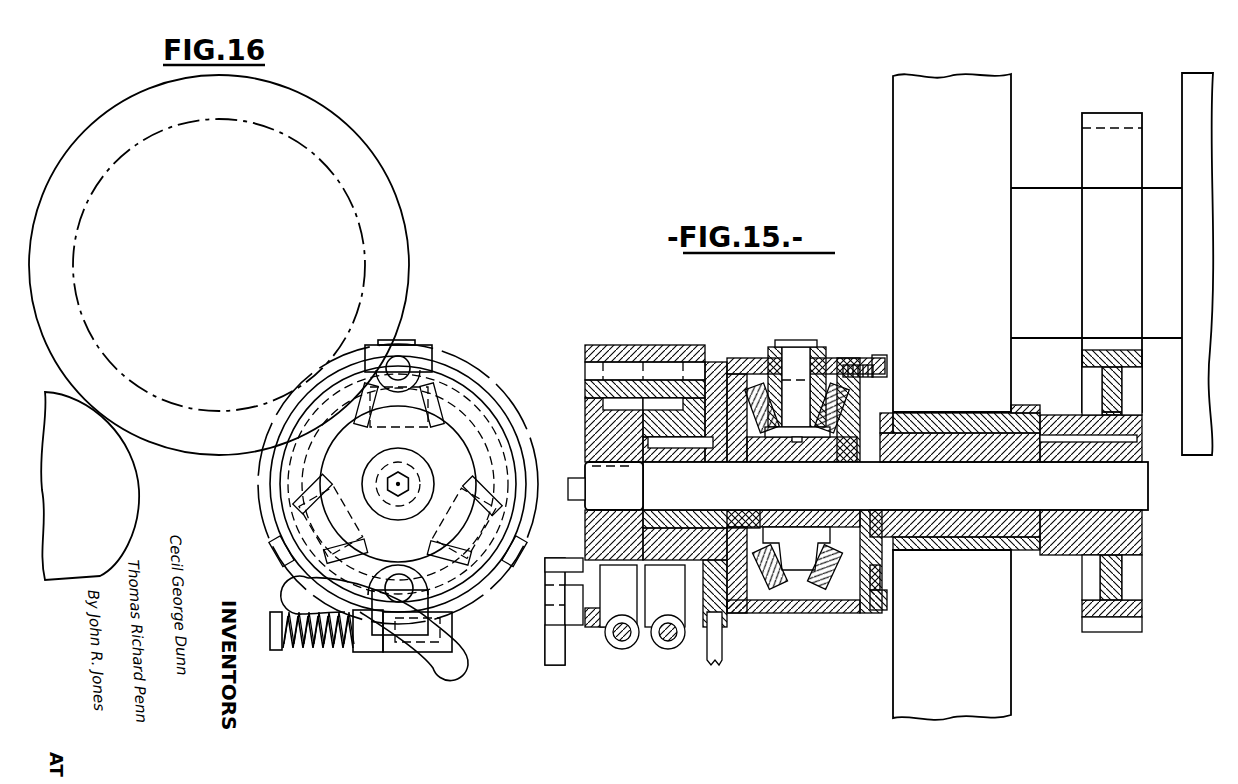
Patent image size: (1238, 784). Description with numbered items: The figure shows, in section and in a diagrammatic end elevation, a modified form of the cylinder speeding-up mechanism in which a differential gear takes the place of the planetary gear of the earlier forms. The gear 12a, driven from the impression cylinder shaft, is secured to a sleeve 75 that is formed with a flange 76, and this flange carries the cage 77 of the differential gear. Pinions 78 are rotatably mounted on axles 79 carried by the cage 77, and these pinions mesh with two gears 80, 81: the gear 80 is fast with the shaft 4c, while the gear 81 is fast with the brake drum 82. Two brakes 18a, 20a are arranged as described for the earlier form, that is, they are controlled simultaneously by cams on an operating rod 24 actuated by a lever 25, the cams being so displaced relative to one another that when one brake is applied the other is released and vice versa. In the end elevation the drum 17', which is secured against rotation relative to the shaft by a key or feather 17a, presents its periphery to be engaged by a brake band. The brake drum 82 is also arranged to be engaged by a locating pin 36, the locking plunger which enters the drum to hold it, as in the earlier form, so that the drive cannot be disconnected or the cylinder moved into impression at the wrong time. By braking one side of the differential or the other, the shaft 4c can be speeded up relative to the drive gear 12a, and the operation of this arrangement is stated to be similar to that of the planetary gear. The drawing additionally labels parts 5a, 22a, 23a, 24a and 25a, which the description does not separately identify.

In FIG. 16, the gear 12a is at (470, 360).
In FIG. 15, the gear 12a is at (1100, 634).
In FIG. 16, the pinions 78 is at (455, 397).
In FIG. 15, the pinions 78 is at (775, 385).
In FIG. 16, the drum 17' is at (374, 484).
In FIG. 16, the shaft 4c is at (378, 465).
In FIG. 15, the shaft 4c is at (858, 486).
In FIG. 16, the operating rod 24 is at (386, 622).
In FIG. 16, the lever 25 is at (414, 633).
In FIG. 15, the key or feather 17a is at (582, 432).
In FIG. 15, the brake 18a is at (620, 405).
In FIG. 15, the brake 20a is at (663, 405).
In FIG. 15, the cage 77 is at (762, 355).
In FIG. 15, the axles 79 is at (800, 360).
In FIG. 15, the flange 76 is at (882, 392).
In FIG. 15, the sleeve 75 is at (975, 425).
In FIG. 15, the sleeve 5a is at (1020, 410).
In FIG. 15, the brake drum 82 is at (690, 422).
In FIG. 15, the lever arm 24a is at (560, 566).
In FIG. 15, the lever end 25a is at (547, 636).
In FIG. 15, the bolt 22a is at (606, 578).
In FIG. 15, the bolt 23a is at (651, 578).
In FIG. 15, the locating pin 36 is at (727, 647).
In FIG. 15, the gear 81 is at (765, 580).
In FIG. 15, the gear 80 is at (825, 580).